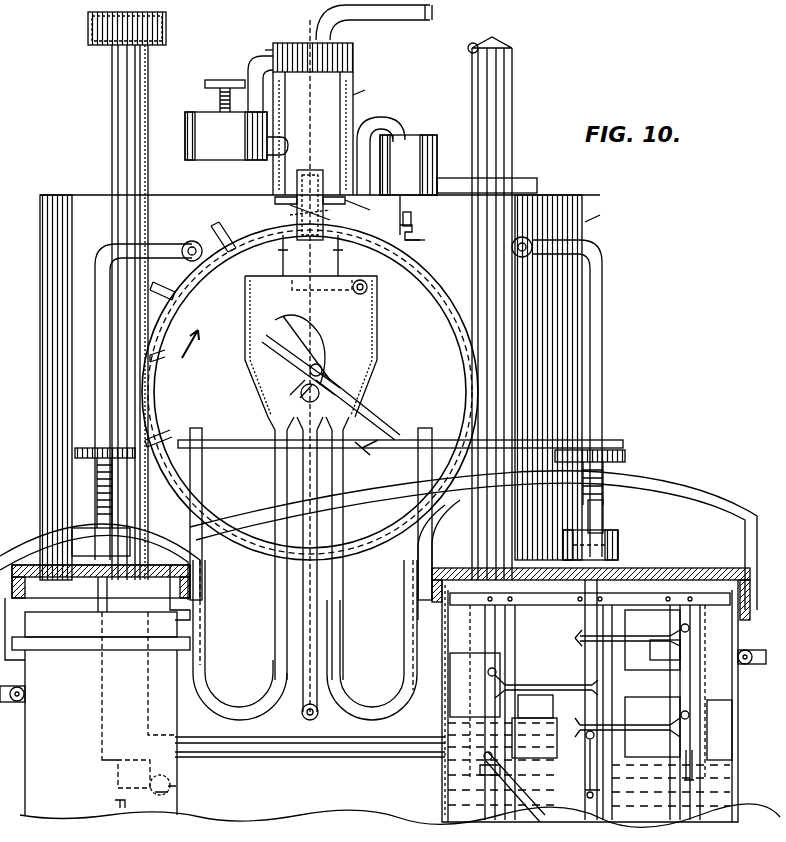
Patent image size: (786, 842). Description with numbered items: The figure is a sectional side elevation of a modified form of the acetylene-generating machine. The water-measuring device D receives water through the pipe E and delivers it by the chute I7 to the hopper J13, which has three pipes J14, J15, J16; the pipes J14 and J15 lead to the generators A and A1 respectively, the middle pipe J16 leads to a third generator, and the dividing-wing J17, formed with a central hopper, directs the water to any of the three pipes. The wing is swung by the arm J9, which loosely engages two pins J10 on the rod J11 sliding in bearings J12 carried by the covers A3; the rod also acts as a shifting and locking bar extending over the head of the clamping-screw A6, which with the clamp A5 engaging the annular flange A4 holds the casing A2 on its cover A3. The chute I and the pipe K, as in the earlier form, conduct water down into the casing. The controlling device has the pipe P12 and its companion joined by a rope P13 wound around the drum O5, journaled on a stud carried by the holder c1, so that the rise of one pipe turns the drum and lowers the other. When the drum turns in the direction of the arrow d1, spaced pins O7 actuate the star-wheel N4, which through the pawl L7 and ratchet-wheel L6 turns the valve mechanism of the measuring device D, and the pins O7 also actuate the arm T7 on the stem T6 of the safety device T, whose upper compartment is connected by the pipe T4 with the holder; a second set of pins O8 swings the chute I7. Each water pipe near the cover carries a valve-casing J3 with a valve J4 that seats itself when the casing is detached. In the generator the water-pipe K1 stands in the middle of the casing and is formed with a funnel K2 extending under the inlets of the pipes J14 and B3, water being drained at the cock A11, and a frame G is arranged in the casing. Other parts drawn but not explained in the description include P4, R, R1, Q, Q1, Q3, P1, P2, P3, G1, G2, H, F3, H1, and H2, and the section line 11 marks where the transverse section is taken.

The pipe B3 is at (95, 350).
The holder c1 is at (598, 213).
The pipe P12 is at (125, 153).
The rope P13 is at (152, 187).
The post P4 is at (500, 160).
The pipe R is at (262, 60).
The cylinder R1 is at (273, 48).
The section line 11 is at (454, 420).
The pipe E is at (410, 20).
The valve box Q1 is at (195, 135).
The adjusting screw Q3 is at (222, 80).
The nozzle Q is at (288, 146).
The safety device T is at (418, 164).
The pipe T4 is at (385, 118).
The water-measuring device D is at (361, 98).
The valve stem T6 is at (412, 222).
The arm T7 is at (425, 242).
The chute I7 is at (305, 199).
The pawl L7 is at (285, 210).
The ratchet-wheel L6 is at (345, 206).
The star-wheel N4 is at (361, 209).
The chute I is at (322, 264).
The drum O5 is at (310, 392).
The pins O7 is at (194, 252).
The pins O8 is at (200, 275).
The arrow d1 is at (197, 344).
The hopper J13 is at (378, 340).
The dividing-wing J17 is at (322, 335).
The arm J9 is at (372, 418).
The pipe J15 is at (290, 512).
The pipe J16 is at (300, 475).
The pipe J14 is at (345, 490).
The pins J10 is at (365, 462).
The rod J11 is at (623, 442).
The bearings J12 is at (202, 468).
The clamp A5 is at (30, 520).
The clamping-screw A6 is at (75, 473).
The valve J4 is at (603, 515).
The valve-casing J3 is at (618, 540).
The funnel K2 is at (600, 575).
The pipe P1 is at (475, 552).
The slab P2 is at (140, 555).
The cover A3 is at (90, 615).
The annular flange A4 is at (90, 648).
The generator A1 is at (178, 800).
The casing A2 is at (8, 767).
The cock A11 is at (25, 692).
The rail P3 is at (305, 755).
The generator A is at (440, 805).
The frame G is at (562, 605).
The post G1 is at (530, 615).
The post G2 is at (490, 628).
The float H is at (540, 655).
The float box F3 is at (645, 640).
The pipe K is at (715, 735).
The rod H1 is at (580, 740).
The pivot H2 is at (555, 780).
The water-pipe K1 is at (600, 792).